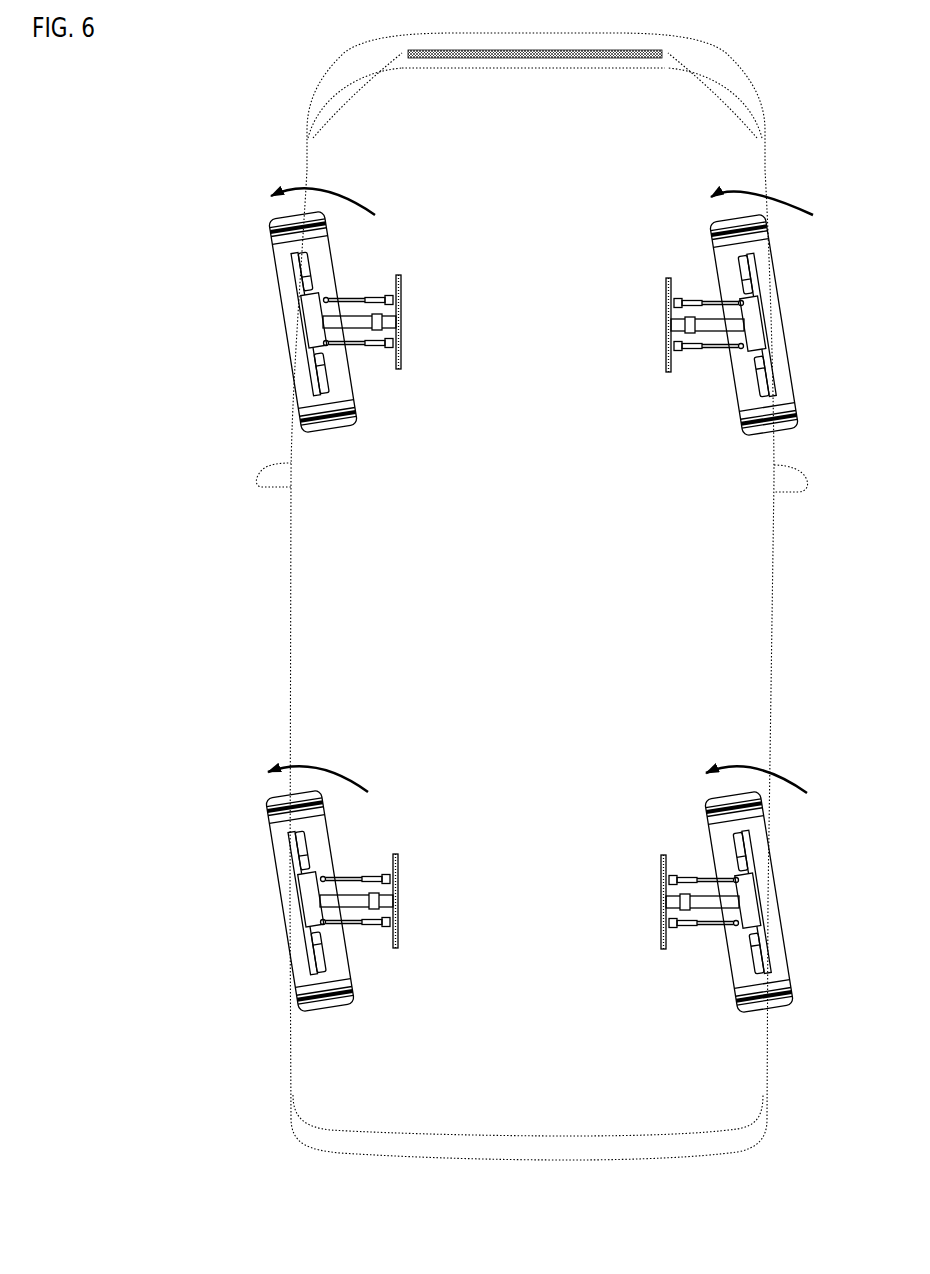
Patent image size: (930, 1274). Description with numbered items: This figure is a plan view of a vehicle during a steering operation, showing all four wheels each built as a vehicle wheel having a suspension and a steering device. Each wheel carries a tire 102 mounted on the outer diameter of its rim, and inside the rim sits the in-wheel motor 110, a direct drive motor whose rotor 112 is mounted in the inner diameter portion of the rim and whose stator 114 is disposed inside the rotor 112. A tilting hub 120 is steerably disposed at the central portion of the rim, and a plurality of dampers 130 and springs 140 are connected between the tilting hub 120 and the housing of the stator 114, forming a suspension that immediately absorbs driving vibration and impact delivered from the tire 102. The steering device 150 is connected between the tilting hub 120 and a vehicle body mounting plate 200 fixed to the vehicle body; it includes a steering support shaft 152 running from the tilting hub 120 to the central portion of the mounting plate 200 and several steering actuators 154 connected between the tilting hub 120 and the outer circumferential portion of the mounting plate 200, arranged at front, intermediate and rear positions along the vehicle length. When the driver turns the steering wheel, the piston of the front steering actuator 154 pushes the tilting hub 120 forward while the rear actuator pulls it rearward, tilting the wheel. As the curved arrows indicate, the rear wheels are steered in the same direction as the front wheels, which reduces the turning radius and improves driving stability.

The tire 102 is at (230, 286).
The in-wheel motor 110 is at (230, 304).
The rotor 112 is at (283, 226).
The stator 114 is at (273, 248).
The tilting hub 120 is at (317, 338).
The dampers 130 is at (297, 281).
The springs 140 is at (280, 258).
The steering device 150 is at (398, 314).
The steering support shaft 152 is at (358, 327).
The steering actuators 154 is at (384, 323).
The vehicle body mounting plate 200 is at (402, 280).